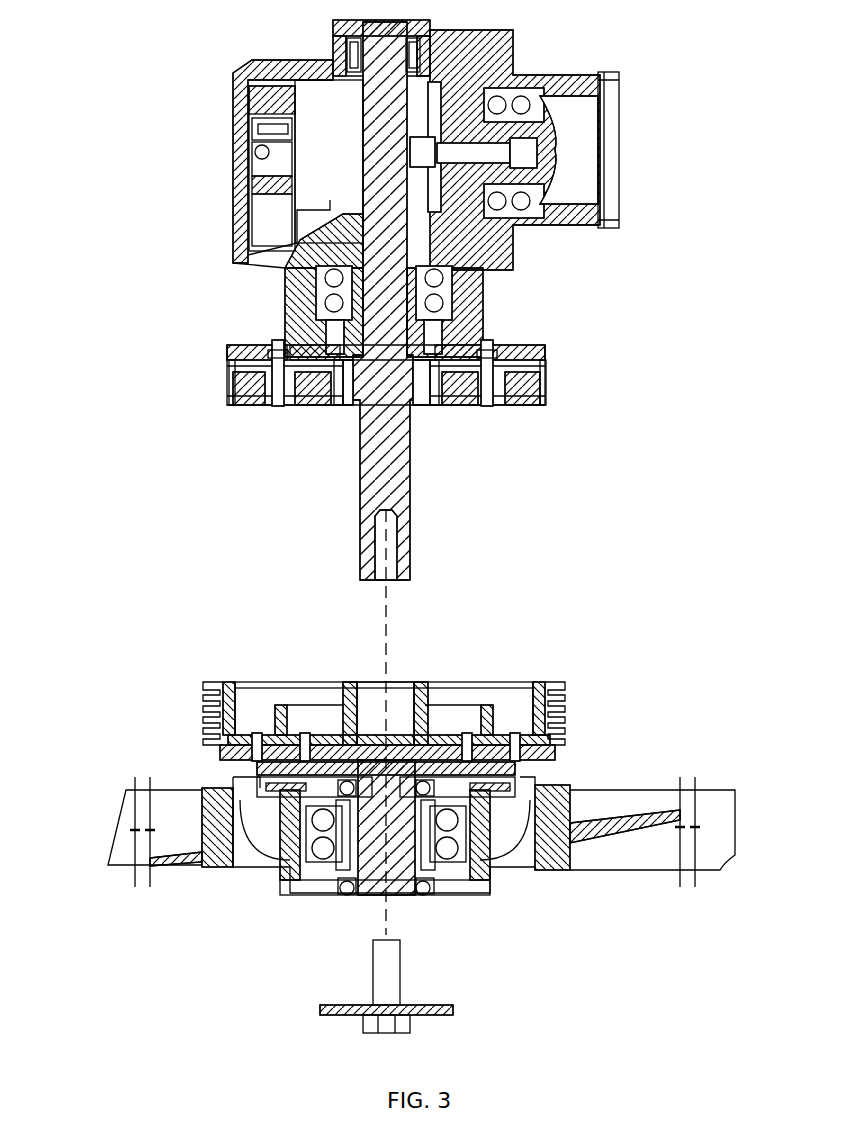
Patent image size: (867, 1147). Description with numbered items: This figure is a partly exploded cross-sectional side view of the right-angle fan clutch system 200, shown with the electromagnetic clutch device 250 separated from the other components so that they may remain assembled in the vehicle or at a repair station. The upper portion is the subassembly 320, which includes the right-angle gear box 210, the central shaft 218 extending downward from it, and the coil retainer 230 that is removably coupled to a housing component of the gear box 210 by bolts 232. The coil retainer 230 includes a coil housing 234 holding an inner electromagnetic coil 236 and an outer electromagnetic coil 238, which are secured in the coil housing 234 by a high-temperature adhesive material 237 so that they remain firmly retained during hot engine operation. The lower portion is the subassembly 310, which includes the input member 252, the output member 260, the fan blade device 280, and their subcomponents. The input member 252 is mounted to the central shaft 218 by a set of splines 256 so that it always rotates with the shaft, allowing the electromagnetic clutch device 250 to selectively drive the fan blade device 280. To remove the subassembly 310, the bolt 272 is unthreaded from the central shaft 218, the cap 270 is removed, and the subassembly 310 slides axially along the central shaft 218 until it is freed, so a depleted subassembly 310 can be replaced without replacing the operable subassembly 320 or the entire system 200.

The right-angle fan clutch system 200 is at (106, 90).
The right-angle gear box 210 is at (233, 76).
The central shaft 218 is at (360, 548).
The coil retainer 230 is at (660, 365).
The bolts 232 is at (488, 345).
The coil housing 234 is at (540, 388).
The inner electromagnetic coil 236 is at (540, 410).
The adhesive material 237 is at (236, 405).
The outer electromagnetic coil 238 is at (545, 398).
The electromagnetic clutch device 250 is at (182, 680).
The input member 252 is at (205, 682).
The splines 256 is at (415, 410).
The output member 260 is at (485, 893).
The cap 270 is at (330, 1015).
The bolt 272 is at (365, 1030).
The fan blade device 280 is at (555, 870).
The subassembly 310 is at (62, 680).
The subassembly 320 is at (734, 20).